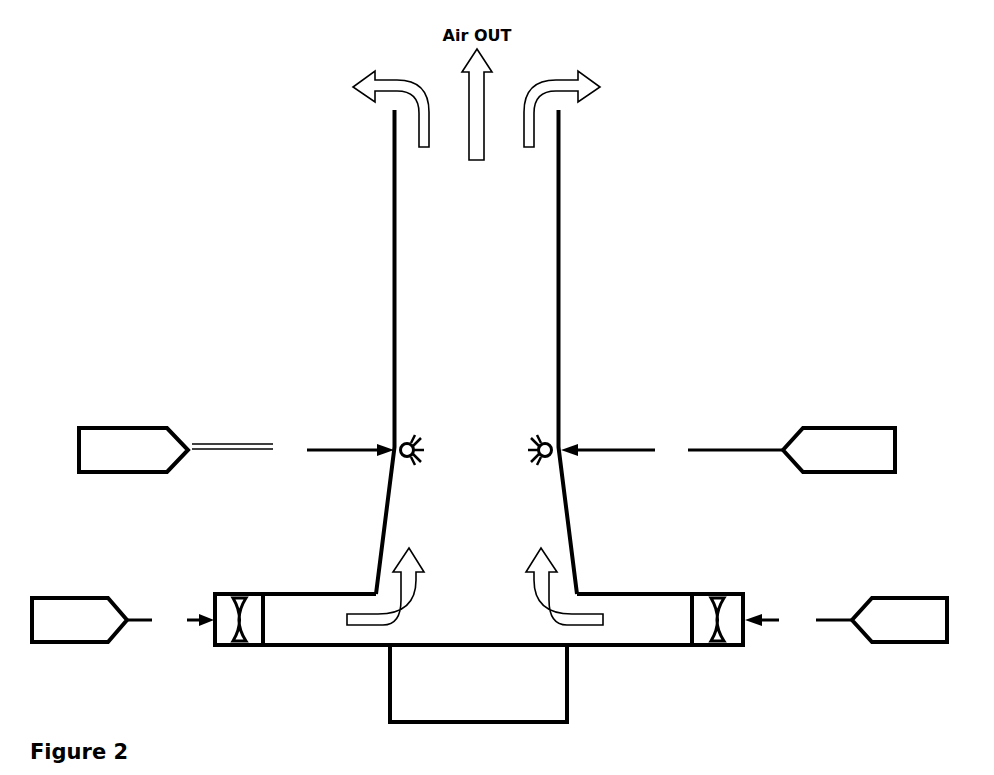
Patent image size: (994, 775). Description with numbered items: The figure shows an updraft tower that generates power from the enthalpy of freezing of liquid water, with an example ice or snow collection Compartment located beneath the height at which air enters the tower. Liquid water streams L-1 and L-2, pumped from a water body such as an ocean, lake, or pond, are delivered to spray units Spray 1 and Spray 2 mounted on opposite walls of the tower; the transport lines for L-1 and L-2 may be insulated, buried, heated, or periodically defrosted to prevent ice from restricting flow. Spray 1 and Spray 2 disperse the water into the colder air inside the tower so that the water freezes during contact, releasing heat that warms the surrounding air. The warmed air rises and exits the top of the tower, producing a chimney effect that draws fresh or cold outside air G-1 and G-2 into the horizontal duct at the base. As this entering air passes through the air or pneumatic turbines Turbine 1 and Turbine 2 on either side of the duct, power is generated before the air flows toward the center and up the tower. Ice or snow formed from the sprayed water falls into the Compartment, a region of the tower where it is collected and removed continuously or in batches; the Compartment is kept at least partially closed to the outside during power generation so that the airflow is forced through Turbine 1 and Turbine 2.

The liquid water stream L-1 is at (236, 450).
The liquid water stream L-2 is at (728, 450).
The air entering the tower G-1 is at (123, 620).
The air entering the tower G-2 is at (846, 620).
The spray unit Spray 1 is at (370, 442).
The spray unit Spray 2 is at (582, 442).
The air turbine Turbine 1 is at (243, 632).
The air turbine Turbine 2 is at (721, 632).
The ice or snow collection compartment Compartment is at (478, 683).